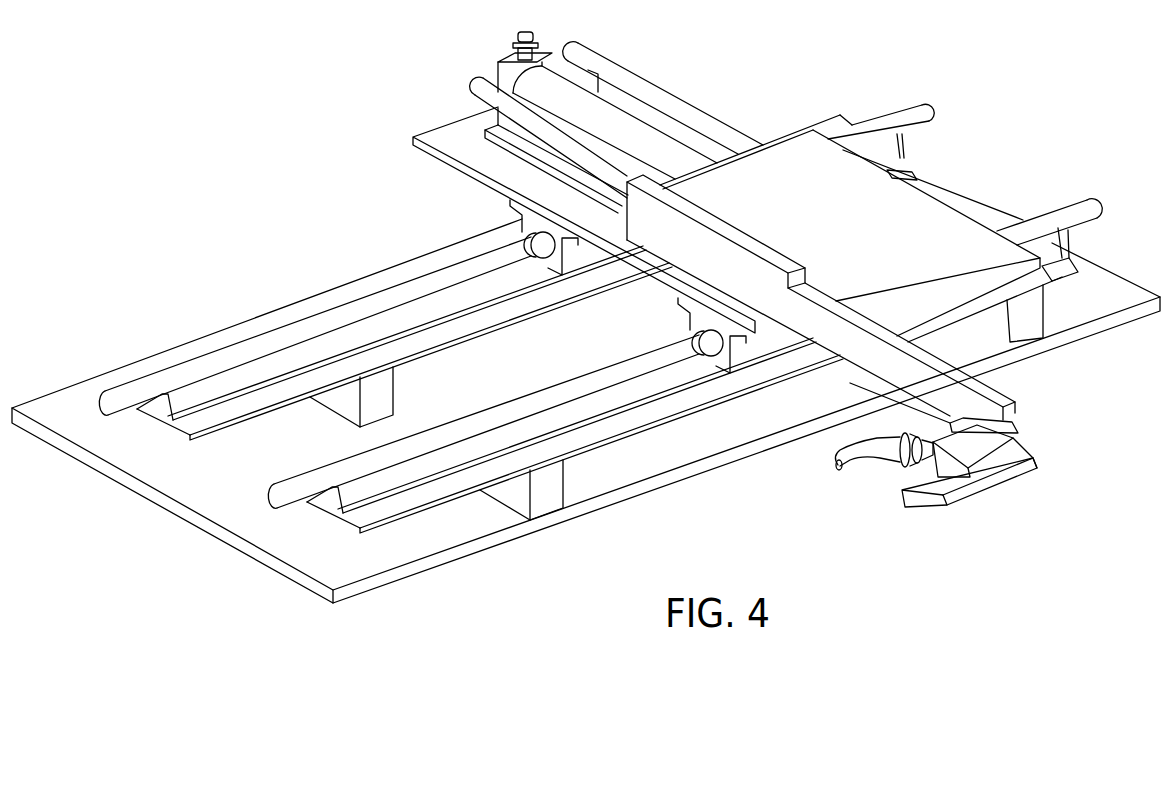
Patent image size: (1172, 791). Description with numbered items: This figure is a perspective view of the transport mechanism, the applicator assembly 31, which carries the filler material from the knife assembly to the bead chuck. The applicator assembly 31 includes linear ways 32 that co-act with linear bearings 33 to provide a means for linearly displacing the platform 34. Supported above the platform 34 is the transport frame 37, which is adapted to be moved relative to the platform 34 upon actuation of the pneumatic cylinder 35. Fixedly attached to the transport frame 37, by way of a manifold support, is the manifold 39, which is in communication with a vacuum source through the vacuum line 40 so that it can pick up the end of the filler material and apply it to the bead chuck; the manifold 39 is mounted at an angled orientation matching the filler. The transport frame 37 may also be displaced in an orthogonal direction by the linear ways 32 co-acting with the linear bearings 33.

The applicator assembly 31 is at (905, 213).
The linear ways 32 is at (322, 481).
The linear bearings 33 is at (745, 351).
The platform 34 is at (545, 364).
The pneumatic cylinder 35 is at (567, 93).
The transport frame 37 is at (963, 270).
The manifold 39 is at (968, 492).
The vacuum line 40 is at (852, 470).